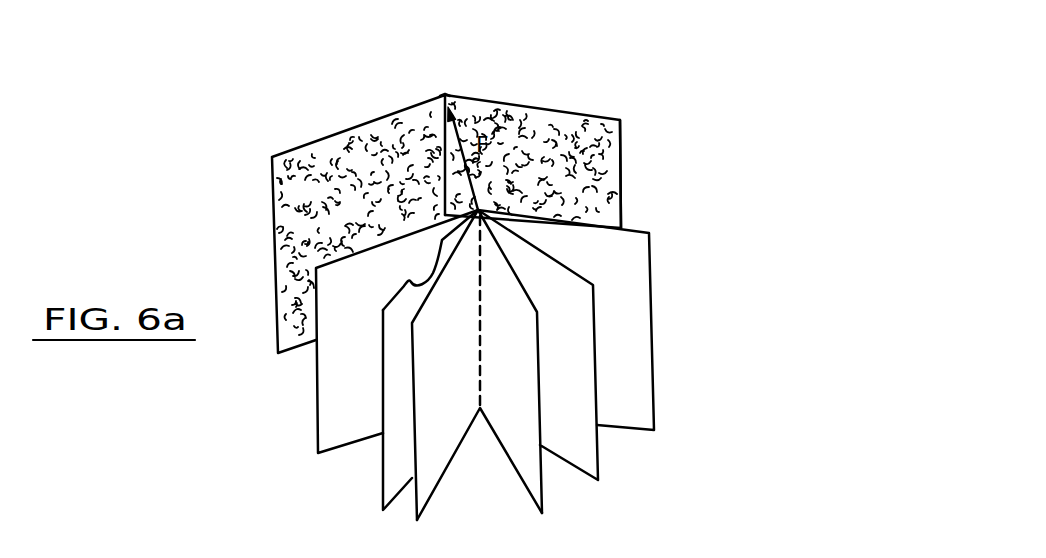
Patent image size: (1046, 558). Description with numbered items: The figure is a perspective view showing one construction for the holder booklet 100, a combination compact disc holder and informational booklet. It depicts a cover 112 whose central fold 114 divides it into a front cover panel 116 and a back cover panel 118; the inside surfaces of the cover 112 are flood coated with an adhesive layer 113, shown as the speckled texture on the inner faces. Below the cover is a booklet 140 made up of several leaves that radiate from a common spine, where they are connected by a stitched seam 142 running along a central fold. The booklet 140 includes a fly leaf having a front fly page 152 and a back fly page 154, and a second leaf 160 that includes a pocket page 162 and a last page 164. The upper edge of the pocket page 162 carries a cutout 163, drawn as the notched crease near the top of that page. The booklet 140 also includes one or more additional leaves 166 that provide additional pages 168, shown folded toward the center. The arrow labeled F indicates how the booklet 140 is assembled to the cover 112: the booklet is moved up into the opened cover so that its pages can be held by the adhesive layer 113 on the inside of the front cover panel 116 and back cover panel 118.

The holder booklet 100 is at (763, 41).
The cover 112 is at (530, 98).
The adhesive layer 113 is at (585, 158).
The central fold 114 is at (445, 90).
The front cover panel 116 is at (267, 178).
The back cover panel 118 is at (630, 177).
The booklet 140 is at (667, 292).
The stitched seam 142 is at (487, 370).
The front fly page 152 is at (313, 410).
The back fly page 154 is at (660, 330).
The second leaf 160 is at (508, 373).
The pocket page 162 is at (378, 470).
The cutout 163 is at (427, 268).
The last page 164 is at (605, 453).
The additional leaves 166 is at (581, 472).
The additional pages 168 is at (427, 522).